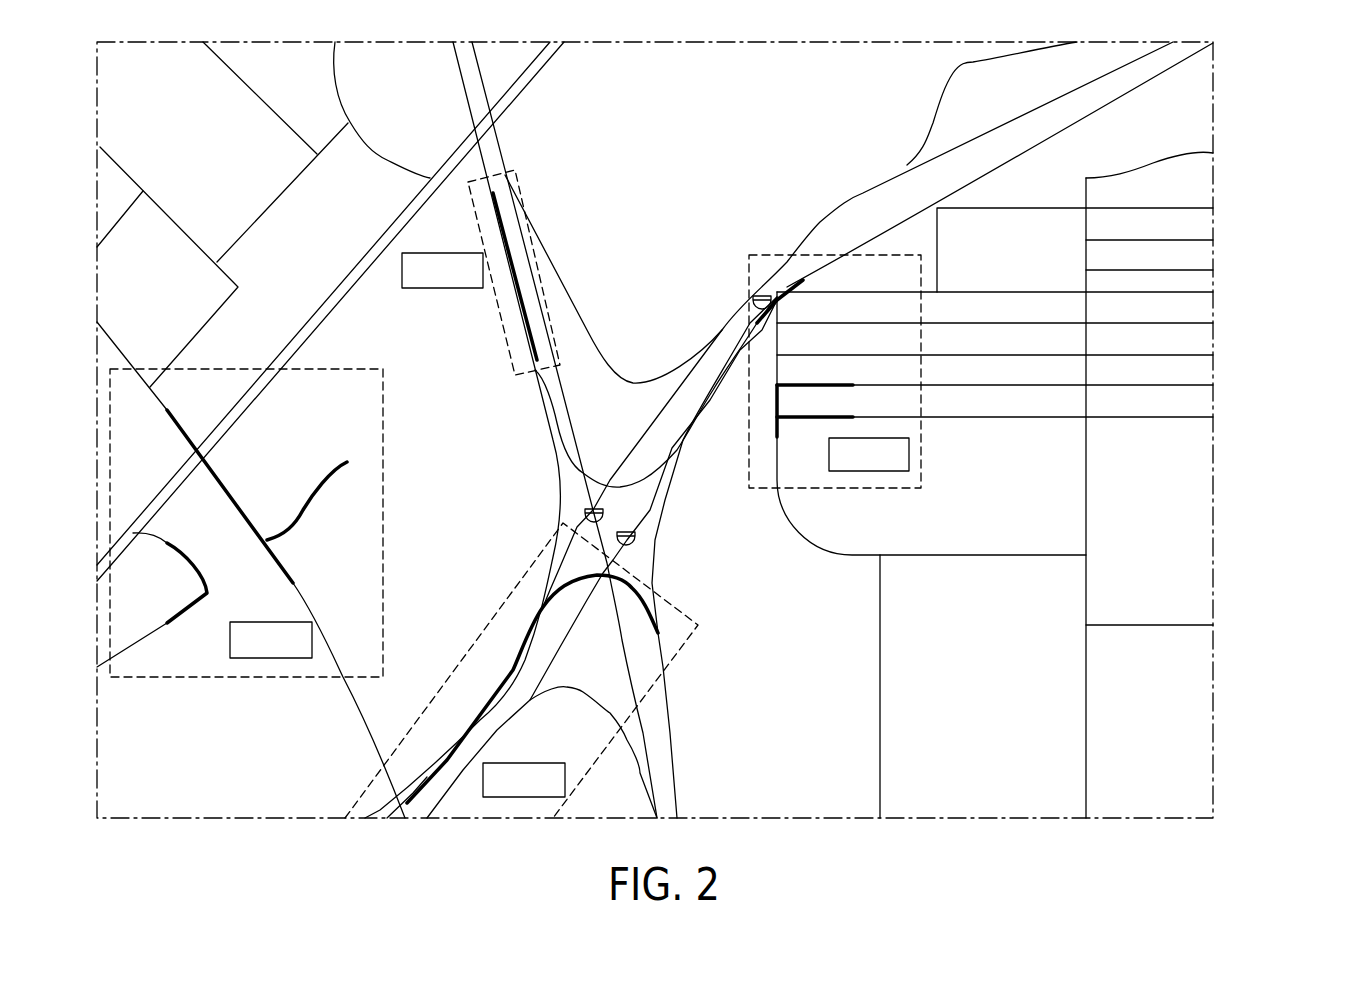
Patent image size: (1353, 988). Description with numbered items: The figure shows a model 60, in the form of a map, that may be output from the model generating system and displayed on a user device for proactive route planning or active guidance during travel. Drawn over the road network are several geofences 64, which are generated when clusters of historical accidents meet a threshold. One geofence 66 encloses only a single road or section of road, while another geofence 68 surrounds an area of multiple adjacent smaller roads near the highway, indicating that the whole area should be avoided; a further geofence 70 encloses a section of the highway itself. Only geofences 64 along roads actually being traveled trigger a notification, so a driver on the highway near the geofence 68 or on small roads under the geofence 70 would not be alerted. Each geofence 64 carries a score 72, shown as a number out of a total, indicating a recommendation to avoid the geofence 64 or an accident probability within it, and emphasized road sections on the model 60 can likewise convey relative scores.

The model 60 is at (1262, 73).
The geofences 64 is at (543, 288).
The geofence 66 is at (557, 350).
The geofence 68 is at (923, 270).
The geofence 70 is at (600, 755).
The score 72 is at (442, 290).